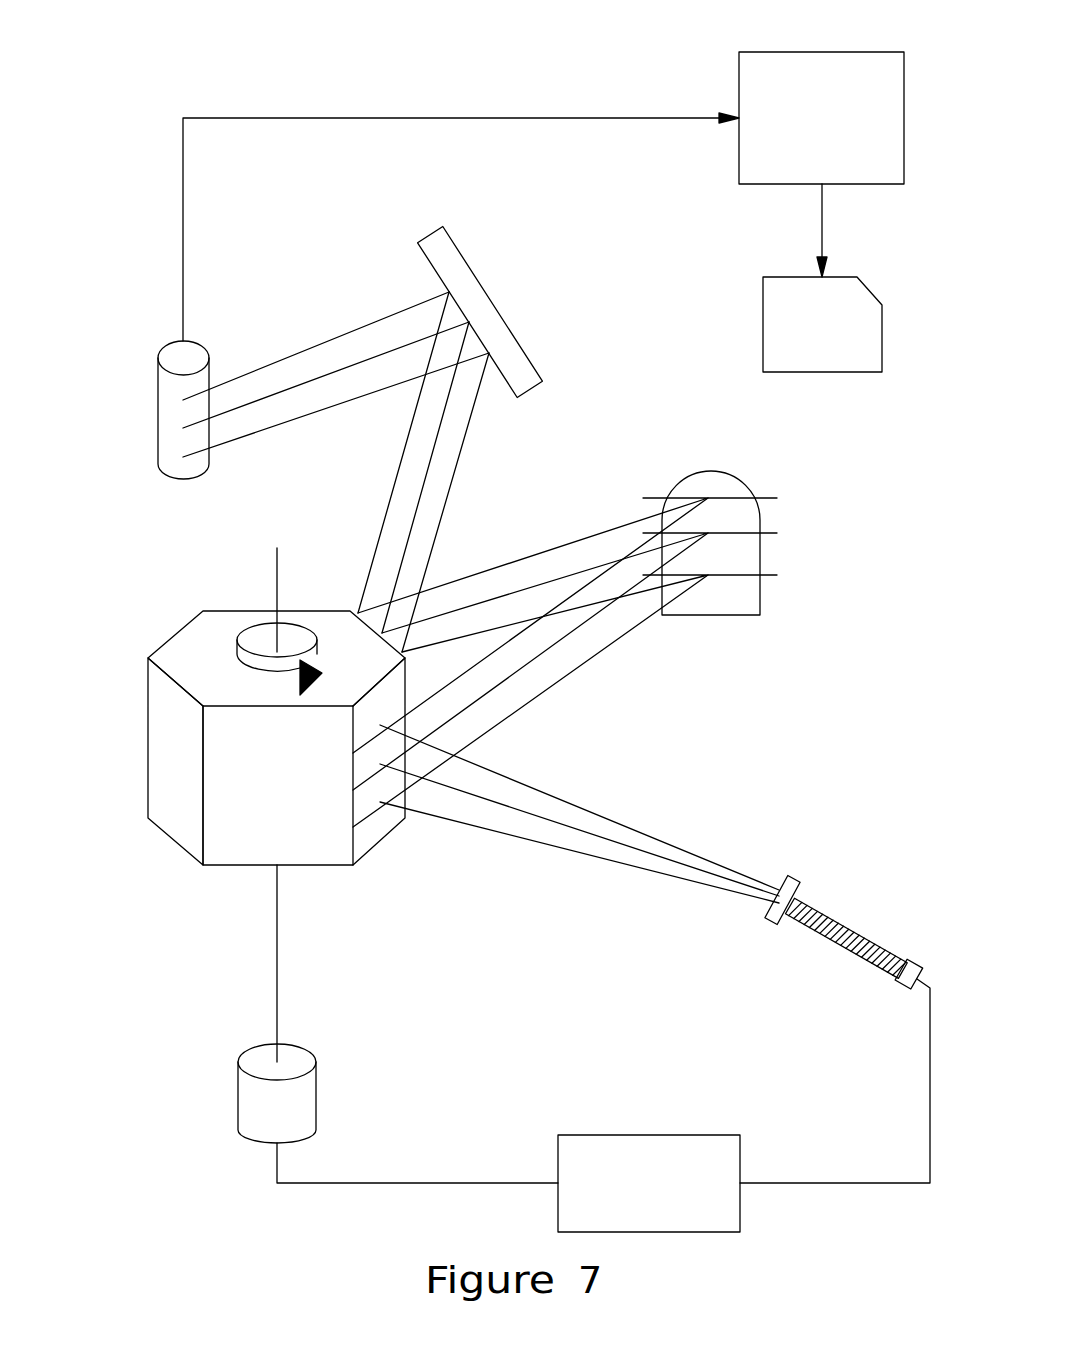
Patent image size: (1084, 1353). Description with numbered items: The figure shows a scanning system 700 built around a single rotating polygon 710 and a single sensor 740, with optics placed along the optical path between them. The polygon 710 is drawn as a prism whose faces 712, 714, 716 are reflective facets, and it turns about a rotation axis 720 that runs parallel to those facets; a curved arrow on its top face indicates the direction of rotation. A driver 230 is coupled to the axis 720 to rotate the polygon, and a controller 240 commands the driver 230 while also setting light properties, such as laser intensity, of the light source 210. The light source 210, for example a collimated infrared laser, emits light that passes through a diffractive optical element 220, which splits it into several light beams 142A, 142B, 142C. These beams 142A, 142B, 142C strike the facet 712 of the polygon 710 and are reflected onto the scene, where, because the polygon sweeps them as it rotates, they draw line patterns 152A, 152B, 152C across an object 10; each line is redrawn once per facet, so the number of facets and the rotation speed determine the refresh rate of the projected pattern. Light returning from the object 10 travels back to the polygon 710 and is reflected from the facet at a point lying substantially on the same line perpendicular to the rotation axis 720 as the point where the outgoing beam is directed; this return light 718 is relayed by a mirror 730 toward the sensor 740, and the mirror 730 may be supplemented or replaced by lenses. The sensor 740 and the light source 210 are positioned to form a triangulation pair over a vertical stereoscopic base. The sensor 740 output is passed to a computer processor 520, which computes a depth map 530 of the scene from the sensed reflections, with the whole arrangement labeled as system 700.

The object 10 is at (690, 472).
The line pattern 152A is at (778, 499).
The line pattern 152B is at (777, 534).
The line pattern 152C is at (777, 576).
The light beam 142A is at (647, 830).
The light beam 142B is at (548, 823).
The light beam 142C is at (688, 885).
The light source 210 is at (848, 920).
The diffractive optical element 220 is at (796, 878).
The driver 230 is at (240, 1080).
The controller 240 is at (645, 1135).
The computer processor 520 is at (822, 52).
The depth map 530 is at (790, 277).
The system 700 is at (478, 1017).
The polygon 710 is at (147, 585).
The reflective facet 712 is at (370, 823).
The front facet 714 is at (240, 852).
The side facet 716 is at (156, 732).
The incident light beams 718 is at (375, 627).
The rotation axis 720 is at (272, 583).
The mirror 730 is at (423, 258).
The sensor 740 is at (170, 353).